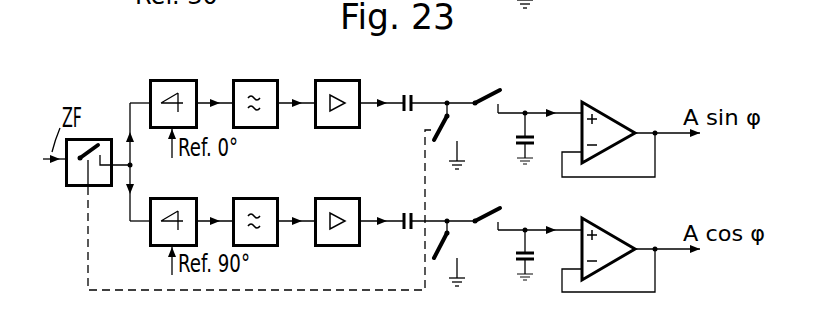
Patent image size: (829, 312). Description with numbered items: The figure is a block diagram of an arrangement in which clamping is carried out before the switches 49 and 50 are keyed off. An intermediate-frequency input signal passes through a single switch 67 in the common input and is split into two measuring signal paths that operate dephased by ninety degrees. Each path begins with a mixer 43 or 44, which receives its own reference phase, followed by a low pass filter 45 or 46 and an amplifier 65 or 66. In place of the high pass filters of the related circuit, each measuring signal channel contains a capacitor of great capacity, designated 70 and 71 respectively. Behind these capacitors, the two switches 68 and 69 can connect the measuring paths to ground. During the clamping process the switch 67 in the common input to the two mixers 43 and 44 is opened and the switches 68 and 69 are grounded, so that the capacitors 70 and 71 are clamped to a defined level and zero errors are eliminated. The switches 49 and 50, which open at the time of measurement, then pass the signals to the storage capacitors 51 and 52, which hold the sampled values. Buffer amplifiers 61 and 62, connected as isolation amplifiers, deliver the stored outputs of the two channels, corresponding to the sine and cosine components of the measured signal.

The switch 67 is at (93, 138).
The mixer 43 is at (165, 80).
The mixer 44 is at (165, 198).
The low pass filter 45 is at (249, 80).
The low pass filter 46 is at (249, 198).
The amplifier 65 is at (331, 80).
The amplifier 66 is at (331, 198).
The capacitor 70 is at (408, 87).
The capacitor 71 is at (408, 204).
The switch 68 is at (458, 136).
The switch 69 is at (458, 253).
The switch 49 is at (499, 95).
The switch 50 is at (499, 213).
The storage capacitor 51 is at (538, 138).
The storage capacitor 52 is at (538, 254).
The buffer amplifier 61 is at (607, 112).
The buffer amplifier 62 is at (607, 229).